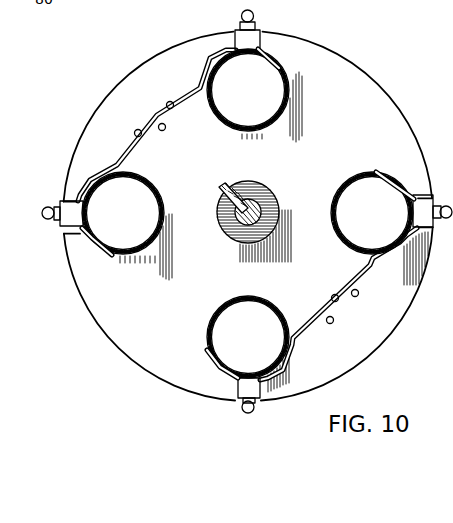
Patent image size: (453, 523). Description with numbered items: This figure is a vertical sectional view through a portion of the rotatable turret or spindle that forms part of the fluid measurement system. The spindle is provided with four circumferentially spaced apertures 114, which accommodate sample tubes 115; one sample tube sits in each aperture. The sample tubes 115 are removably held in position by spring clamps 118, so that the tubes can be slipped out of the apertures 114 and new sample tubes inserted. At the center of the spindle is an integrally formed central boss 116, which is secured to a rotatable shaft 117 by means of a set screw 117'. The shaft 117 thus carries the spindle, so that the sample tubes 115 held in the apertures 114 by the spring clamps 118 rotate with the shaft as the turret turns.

The circumferentially spaced apertures 114 is at (270, 82).
The sample tubes 115 is at (270, 58).
The central boss 116 is at (265, 196).
The rotatable shaft 117 is at (268, 211).
The set screw 117' is at (218, 182).
The spring clamps 118 is at (160, 110).